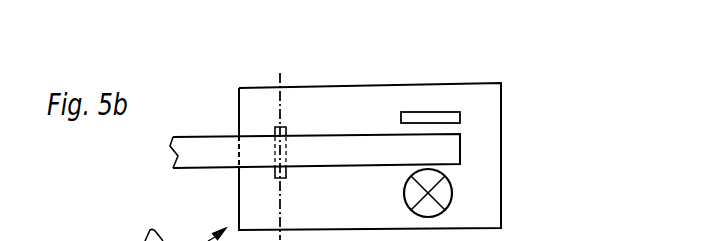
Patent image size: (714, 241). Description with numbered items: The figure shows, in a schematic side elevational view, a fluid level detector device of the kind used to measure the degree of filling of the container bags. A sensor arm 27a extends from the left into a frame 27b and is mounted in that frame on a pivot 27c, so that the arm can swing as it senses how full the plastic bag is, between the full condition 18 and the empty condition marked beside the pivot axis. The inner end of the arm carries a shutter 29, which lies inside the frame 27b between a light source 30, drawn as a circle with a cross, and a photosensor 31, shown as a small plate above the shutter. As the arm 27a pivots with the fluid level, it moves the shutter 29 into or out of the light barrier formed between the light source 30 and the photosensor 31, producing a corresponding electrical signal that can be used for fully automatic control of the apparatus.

The full condition 18 is at (323, 87).
The arm 27a is at (205, 148).
The frame 27b is at (397, 83).
The pivot 27c is at (287, 128).
The shutter 29 is at (455, 150).
The light source 30 is at (445, 193).
The photosensor 31 is at (452, 111).